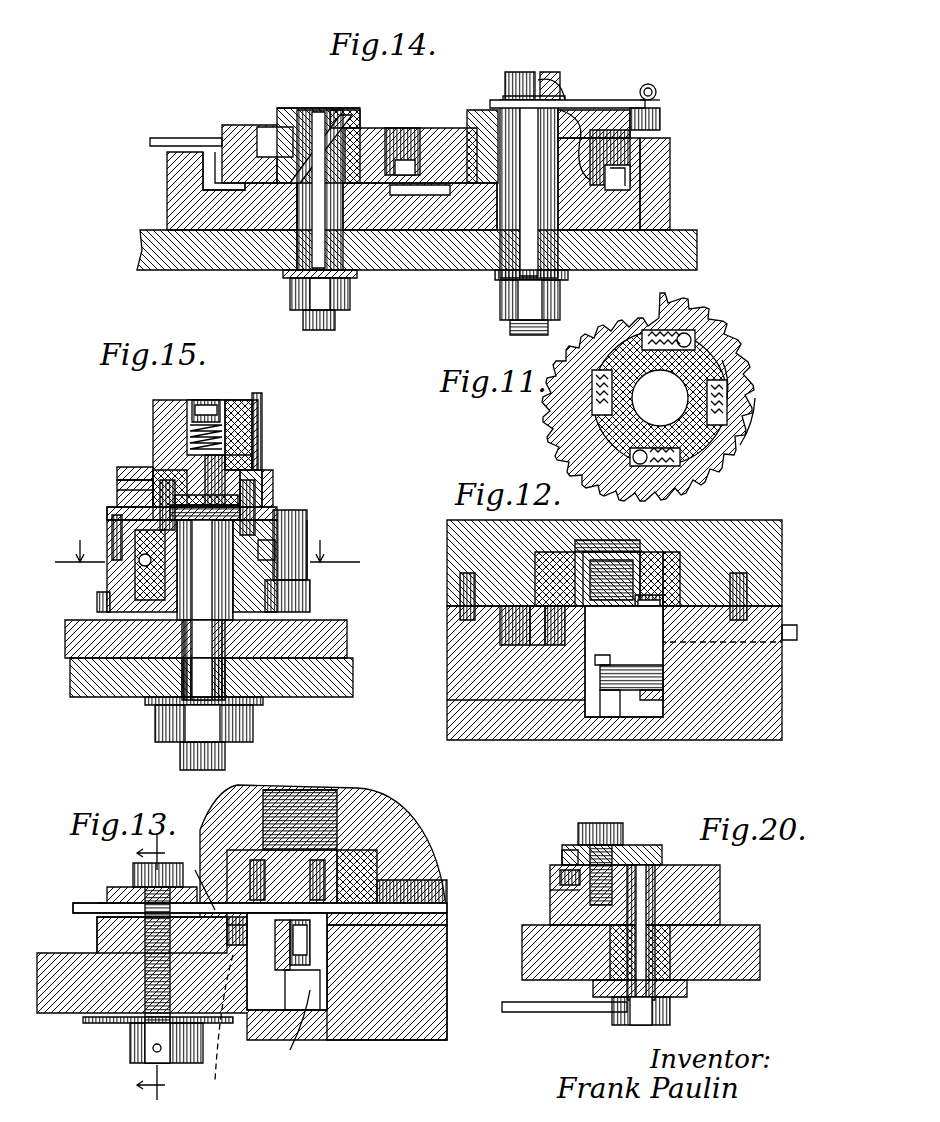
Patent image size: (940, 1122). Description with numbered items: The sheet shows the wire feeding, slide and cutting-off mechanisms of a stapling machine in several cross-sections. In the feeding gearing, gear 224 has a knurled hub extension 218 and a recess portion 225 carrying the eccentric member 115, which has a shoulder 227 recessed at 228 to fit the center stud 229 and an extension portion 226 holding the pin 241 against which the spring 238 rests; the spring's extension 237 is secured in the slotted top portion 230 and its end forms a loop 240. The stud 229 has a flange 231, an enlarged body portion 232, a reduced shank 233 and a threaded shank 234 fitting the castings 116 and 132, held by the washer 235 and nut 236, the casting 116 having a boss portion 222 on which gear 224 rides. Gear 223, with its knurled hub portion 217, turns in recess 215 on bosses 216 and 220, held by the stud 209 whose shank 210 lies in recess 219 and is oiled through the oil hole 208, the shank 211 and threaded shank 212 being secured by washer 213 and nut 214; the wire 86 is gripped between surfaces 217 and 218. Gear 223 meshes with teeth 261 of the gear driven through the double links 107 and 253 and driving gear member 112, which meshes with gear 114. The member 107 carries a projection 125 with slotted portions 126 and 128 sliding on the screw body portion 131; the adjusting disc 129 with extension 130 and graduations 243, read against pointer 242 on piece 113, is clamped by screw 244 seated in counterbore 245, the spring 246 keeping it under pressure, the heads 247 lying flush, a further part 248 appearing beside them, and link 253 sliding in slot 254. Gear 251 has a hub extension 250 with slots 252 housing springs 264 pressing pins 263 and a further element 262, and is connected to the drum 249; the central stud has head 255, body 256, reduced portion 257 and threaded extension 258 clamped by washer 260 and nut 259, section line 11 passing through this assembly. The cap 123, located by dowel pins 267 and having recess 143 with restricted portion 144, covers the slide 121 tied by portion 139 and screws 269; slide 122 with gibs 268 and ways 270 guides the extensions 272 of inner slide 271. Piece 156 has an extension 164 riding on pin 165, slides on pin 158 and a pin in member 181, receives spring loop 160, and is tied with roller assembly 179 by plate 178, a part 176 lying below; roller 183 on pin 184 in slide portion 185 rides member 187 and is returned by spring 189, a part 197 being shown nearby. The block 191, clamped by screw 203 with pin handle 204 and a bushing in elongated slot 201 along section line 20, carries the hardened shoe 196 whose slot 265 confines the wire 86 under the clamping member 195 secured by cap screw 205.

In FIG. 15, the section line 11 is at (207, 551).
In FIG. 13, the section line 20 is at (162, 970).
In FIG. 14, the wire 86 is at (415, 165).
In FIG. 13, the wire 86 is at (73, 910).
In FIG. 20, the wire 86 is at (560, 878).
In FIG. 15, the member 107 is at (135, 485).
In FIG. 15, the cap 112 is at (307, 530).
In FIG. 15, the piece 113 is at (117, 488).
In FIG. 14, the gear 114 is at (350, 110).
In FIG. 14, the eccentric member 115 is at (480, 110).
In FIG. 14, the casting 116 is at (662, 208).
In FIG. 12, the slide 121 is at (672, 560).
In FIG. 13, the slide 121 is at (355, 850).
In FIG. 12, the slide member 122 is at (610, 570).
In FIG. 12, the cap 123 is at (755, 540).
In FIG. 13, the cap 123 is at (360, 850).
In FIG. 15, the projection 125 is at (151, 487).
In FIG. 15, the slotted portion 126 is at (179, 503).
In FIG. 15, the central slotted portion 128 is at (225, 475).
In FIG. 15, the adjusting disc 129 is at (153, 413).
In FIG. 15, the extension 130 is at (153, 470).
In FIG. 15, the screw body portion 131 is at (240, 462).
In FIG. 14, the casting 132 is at (697, 248).
In FIG. 15, the casting 132 is at (100, 685).
In FIG. 12, the casting 132 is at (765, 705).
In FIG. 20, the casting 132 is at (750, 968).
In FIG. 12, the tie portion 139 is at (575, 555).
In FIG. 13, the recess 143 is at (275, 790).
In FIG. 12, the restricted portion 144 is at (600, 540).
In FIG. 13, the restricted portion 144 is at (290, 850).
In FIG. 12, the piece 156 is at (600, 640).
In FIG. 13, the piece 156 is at (300, 960).
In FIG. 12, the pin 158 is at (790, 625).
In FIG. 12, the loop 160 is at (782, 650).
In FIG. 12, the extension 164 is at (605, 700).
In FIG. 12, the pin structure 165 is at (615, 690).
In FIG. 12, the member 176 is at (625, 680).
In FIG. 13, the member 176 is at (285, 990).
In FIG. 12, the triangularly shaped plate 178 is at (650, 700).
In FIG. 12, the roller assembly 179 is at (650, 615).
In FIG. 12, the member 181 is at (500, 720).
In FIG. 13, the member 181 is at (290, 1050).
In FIG. 12, the roller 183 is at (500, 630).
In FIG. 12, the pin 184 is at (555, 645).
In FIG. 12, the slide portion 185 is at (535, 640).
In FIG. 13, the member 187 is at (200, 877).
In FIG. 13, the spring 189 is at (233, 962).
In FIG. 13, the block 191 is at (97, 942).
In FIG. 20, the block 191 is at (710, 880).
In FIG. 13, the clamping member 195 is at (110, 887).
In FIG. 20, the clamping member 195 is at (645, 845).
In FIG. 13, the hardened shoe 196 is at (97, 922).
In FIG. 20, the hardened shoe 196 is at (550, 895).
In FIG. 13, the member 197 is at (290, 935).
In FIG. 13, the slot 201 is at (234, 1025).
In FIG. 20, the slot 201 is at (665, 950).
In FIG. 13, the screw 203 is at (170, 1045).
In FIG. 20, the screw 203 is at (670, 1022).
In FIG. 13, the pin handle 204 is at (153, 1052).
In FIG. 20, the pin handle 204 is at (545, 1012).
In FIG. 13, the cap screw 205 is at (140, 870).
In FIG. 20, the cap screw 205 is at (600, 823).
In FIG. 14, the oil hole 208 is at (301, 124).
In FIG. 14, the stud 209 is at (277, 110).
In FIG. 14, the reduced shank portion 210 is at (320, 190).
In FIG. 14, the smaller shank portion 211 is at (305, 235).
In FIG. 14, the threaded shank portion 212 is at (335, 325).
In FIG. 14, the washer 213 is at (290, 280).
In FIG. 14, the nut 214 is at (345, 283).
In FIG. 14, the recess 215 is at (222, 140).
In FIG. 14, the boss 216 is at (300, 183).
In FIG. 14, the hub portion 217 is at (395, 128).
In FIG. 14, the hub extension 218 is at (615, 158).
In FIG. 14, the recess 219 is at (262, 125).
In FIG. 14, the boss 220 is at (500, 270).
In FIG. 14, the casting 222 is at (167, 210).
In FIG. 14, the gear 223 is at (210, 175).
In FIG. 14, the gear 224 is at (625, 185).
In FIG. 14, the recess portion 225 is at (585, 115).
In FIG. 14, the extension portion 226 is at (660, 128).
In FIG. 14, the hub extension 227 is at (599, 184).
In FIG. 14, the recess 228 is at (420, 130).
In FIG. 14, the center stud 229 is at (510, 75).
In FIG. 14, the slotted top portion 230 is at (545, 72).
In FIG. 14, the flange 231 is at (600, 100).
In FIG. 14, the enlarged body portion 232 is at (527, 80).
In FIG. 14, the reduced shank 233 is at (529, 189).
In FIG. 14, the threaded shank 234 is at (528, 334).
In FIG. 14, the washer 235 is at (500, 280).
In FIG. 14, the nut 236 is at (503, 312).
In FIG. 14, the extension 237 is at (545, 78).
In FIG. 14, the spring 238 is at (648, 84).
In FIG. 14, the loop 240 is at (660, 80).
In FIG. 14, the pin 241 is at (650, 103).
In FIG. 15, the pointer 242 is at (260, 393).
In FIG. 15, the graduations 243 is at (218, 400).
In FIG. 15, the screw member 244 is at (200, 405).
In FIG. 15, the counterbore 245 is at (250, 415).
In FIG. 15, the spring 246 is at (187, 433).
In FIG. 15, the heads 247 is at (260, 480).
In FIG. 15, the member 248 is at (273, 490).
In FIG. 11, the hollow drum 249 is at (727, 390).
In FIG. 15, the hollow drum 249 is at (305, 585).
In FIG. 11, the hub extension 250 is at (720, 375).
In FIG. 15, the hub extension 250 is at (135, 560).
In FIG. 15, the gear 251 is at (107, 510).
In FIG. 15, the slots 252 is at (112, 518).
In FIG. 15, the link 253 is at (120, 490).
In FIG. 15, the slot 254 is at (255, 510).
In FIG. 15, the enlarged head 255 is at (207, 520).
In FIG. 11, the body portion 256 is at (648, 397).
In FIG. 15, the body portion 256 is at (205, 570).
In FIG. 15, the reduced body portion 257 is at (206, 660).
In FIG. 15, the shoulder threaded extension 258 is at (180, 762).
In FIG. 15, the nut 259 is at (155, 725).
In FIG. 15, the washer 260 is at (263, 705).
In FIG. 11, the gear 261 is at (752, 425).
In FIG. 15, the gear 261 is at (310, 612).
In FIG. 11, the pawl 262 is at (700, 340).
In FIG. 11, the pins 263 is at (700, 330).
In FIG. 15, the pins 263 is at (97, 597).
In FIG. 11, the spring member 264 is at (688, 332).
In FIG. 15, the spring member 264 is at (258, 562).
In FIG. 13, the slot 265 is at (110, 890).
In FIG. 20, the slot 265 is at (565, 855).
In FIG. 12, the dowel pin structure 267 is at (470, 573).
In FIG. 12, the slotted gibs 268 is at (610, 583).
In FIG. 13, the slotted gibs 268 is at (350, 960).
In FIG. 13, the screw members 269 is at (350, 860).
In FIG. 13, the sliding ways 270 is at (420, 918).
In FIG. 13, the slide member 271 is at (420, 895).
In FIG. 13, the extensions 272 is at (253, 935).